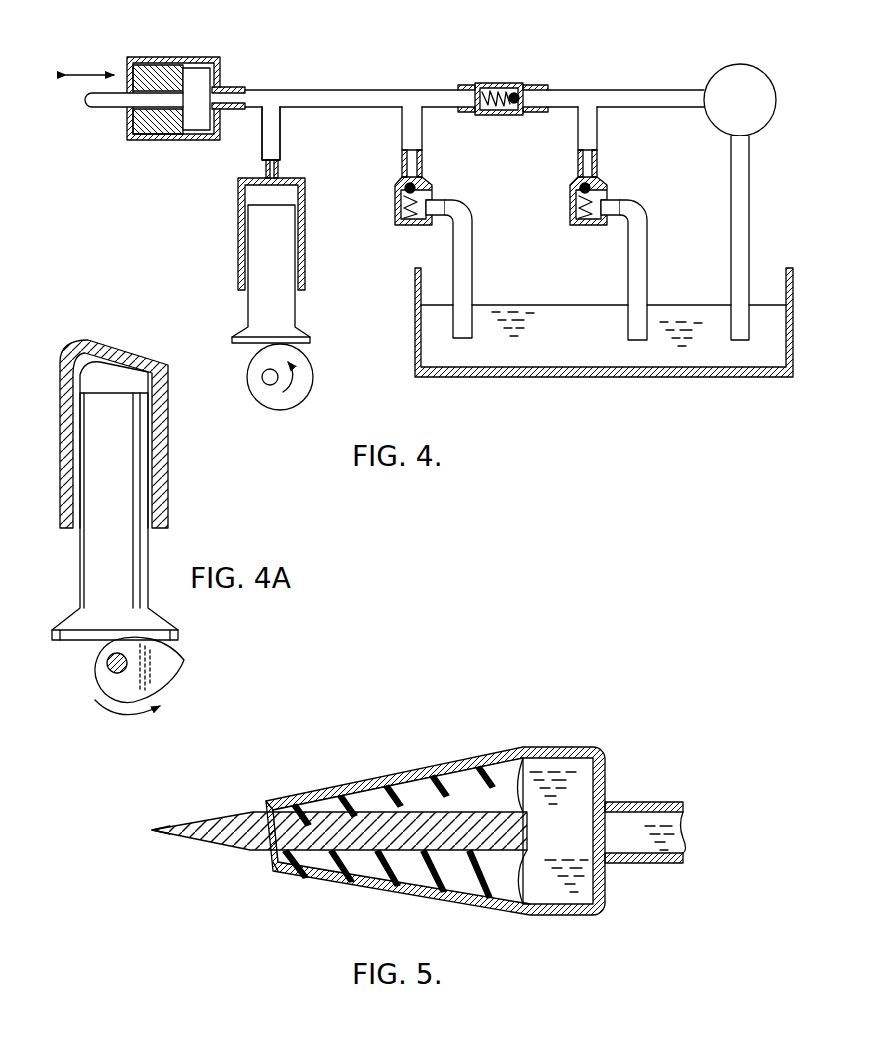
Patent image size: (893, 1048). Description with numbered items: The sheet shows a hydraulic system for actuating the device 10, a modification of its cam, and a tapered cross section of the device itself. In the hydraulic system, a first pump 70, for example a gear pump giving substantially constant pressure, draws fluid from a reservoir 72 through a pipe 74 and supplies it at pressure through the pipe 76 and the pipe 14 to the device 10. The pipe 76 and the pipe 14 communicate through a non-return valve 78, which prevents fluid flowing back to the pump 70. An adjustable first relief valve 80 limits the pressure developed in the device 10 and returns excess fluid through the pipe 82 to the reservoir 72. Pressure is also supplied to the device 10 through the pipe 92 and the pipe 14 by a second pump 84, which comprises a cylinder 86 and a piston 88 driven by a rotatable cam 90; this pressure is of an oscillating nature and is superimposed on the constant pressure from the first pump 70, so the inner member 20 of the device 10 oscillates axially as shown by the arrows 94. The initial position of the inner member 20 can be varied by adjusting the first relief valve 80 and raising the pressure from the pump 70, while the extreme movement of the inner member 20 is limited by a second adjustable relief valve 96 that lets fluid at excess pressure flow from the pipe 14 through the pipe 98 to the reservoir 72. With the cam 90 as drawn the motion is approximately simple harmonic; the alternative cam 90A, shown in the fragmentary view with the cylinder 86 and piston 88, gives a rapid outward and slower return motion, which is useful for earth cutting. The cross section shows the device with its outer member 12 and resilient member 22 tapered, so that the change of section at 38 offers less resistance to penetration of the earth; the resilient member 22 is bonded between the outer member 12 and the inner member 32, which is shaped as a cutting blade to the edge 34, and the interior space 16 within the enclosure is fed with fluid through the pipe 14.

In FIG. 4, the device 10 is at (178, 140).
In FIG. 5, the outer member 12 is at (499, 756).
In FIG. 4, the pipe 14 is at (232, 92).
In FIG. 5, the pipe 14 is at (640, 800).
In FIG. 5, the interior space 16 is at (568, 836).
In FIG. 4, the inner member 20 is at (112, 104).
In FIG. 4, the resilient member 22 is at (166, 70).
In FIG. 5, the resilient member 22 is at (386, 783).
In FIG. 5, the inner member 32 is at (197, 820).
In FIG. 5, the edge 34 is at (150, 828).
In FIG. 5, the change of section 38 is at (265, 805).
In FIG. 4, the first pump 70 is at (722, 116).
In FIG. 4, the reservoir 72 is at (556, 346).
In FIG. 4, the pipe 74 is at (749, 218).
In FIG. 4, the pipe 76 is at (641, 89).
In FIG. 4, the non-return valve 78 is at (487, 84).
In FIG. 4, the first relief valve 80 is at (607, 185).
In FIG. 4, the pipe 82 is at (647, 250).
In FIG. 4, the second pump 84 is at (236, 238).
In FIG. 4, the cylinder 86 is at (305, 260).
In FIG. 4A, the cylinder 86 is at (73, 448).
In FIG. 4, the piston 88 is at (296, 314).
In FIG. 4A, the piston 88 is at (85, 565).
In FIG. 4, the cam 90 is at (305, 385).
In FIG. 4A, the cam 90A is at (184, 664).
In FIG. 4, the pipe 92 is at (282, 152).
In FIG. 4, the arrows 94 is at (90, 72).
In FIG. 4, the second relief valve 96 is at (432, 185).
In FIG. 4, the pipe 98 is at (470, 245).